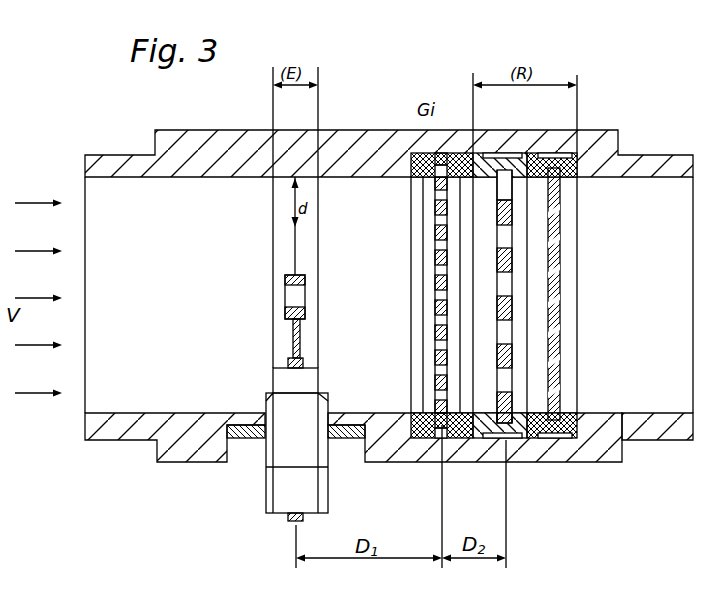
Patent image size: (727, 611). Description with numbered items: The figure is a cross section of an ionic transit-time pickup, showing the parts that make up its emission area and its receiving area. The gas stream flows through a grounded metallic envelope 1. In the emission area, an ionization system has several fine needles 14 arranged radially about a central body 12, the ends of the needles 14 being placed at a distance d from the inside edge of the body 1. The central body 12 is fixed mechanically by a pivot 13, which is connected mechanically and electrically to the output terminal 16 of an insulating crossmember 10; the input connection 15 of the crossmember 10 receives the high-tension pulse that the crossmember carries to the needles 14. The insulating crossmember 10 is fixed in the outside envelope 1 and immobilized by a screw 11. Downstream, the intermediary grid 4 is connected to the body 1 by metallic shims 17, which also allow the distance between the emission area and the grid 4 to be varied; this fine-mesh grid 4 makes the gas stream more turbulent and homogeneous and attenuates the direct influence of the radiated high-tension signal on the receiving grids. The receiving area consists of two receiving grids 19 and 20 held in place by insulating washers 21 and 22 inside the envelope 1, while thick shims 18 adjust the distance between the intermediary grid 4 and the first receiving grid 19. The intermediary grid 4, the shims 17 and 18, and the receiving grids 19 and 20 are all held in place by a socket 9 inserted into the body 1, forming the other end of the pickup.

The metallic envelope 1 is at (598, 133).
The intermediary grid 4 is at (440, 440).
The socket 9 is at (656, 160).
The insulating crossmember 10 is at (265, 488).
The screw 11 is at (244, 445).
The central body 12 is at (306, 282).
The pivot 13 is at (289, 337).
The needles 14 is at (297, 252).
The input connection 15 is at (291, 522).
The output terminal 16 is at (303, 362).
The metallic shims 17 is at (437, 428).
The thick shims 18 is at (460, 440).
The first receiving grid 19 is at (510, 404).
The second receiving grid 20 is at (578, 410).
The insulating washer 21 is at (507, 425).
The insulating washer 22 is at (548, 404).